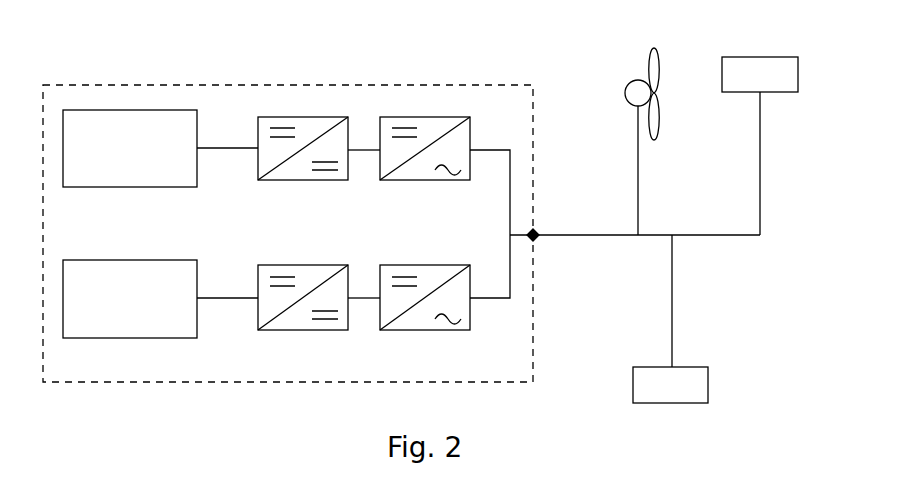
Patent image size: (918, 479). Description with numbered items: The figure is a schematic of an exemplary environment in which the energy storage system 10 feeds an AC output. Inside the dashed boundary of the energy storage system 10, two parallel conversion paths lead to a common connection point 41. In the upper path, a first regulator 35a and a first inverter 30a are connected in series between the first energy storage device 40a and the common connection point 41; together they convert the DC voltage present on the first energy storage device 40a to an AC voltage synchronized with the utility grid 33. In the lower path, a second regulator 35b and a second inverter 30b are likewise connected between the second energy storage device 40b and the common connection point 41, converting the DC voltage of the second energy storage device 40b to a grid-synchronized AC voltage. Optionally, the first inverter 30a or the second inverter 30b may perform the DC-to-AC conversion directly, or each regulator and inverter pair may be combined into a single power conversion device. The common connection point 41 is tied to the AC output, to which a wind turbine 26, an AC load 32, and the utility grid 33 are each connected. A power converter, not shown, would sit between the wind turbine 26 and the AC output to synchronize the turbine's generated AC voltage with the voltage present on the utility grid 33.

The energy storage system 10 is at (128, 85).
The first energy storage device 40a is at (70, 187).
The second energy storage device 40b is at (70, 338).
The first regulator 35a is at (262, 180).
The second regulator 35b is at (262, 330).
The first inverter 30a is at (384, 180).
The second inverter 30b is at (384, 330).
The common connection point 41 is at (538, 232).
The wind turbine 26 is at (632, 82).
The utility grid 33 is at (722, 64).
The AC load 32 is at (633, 376).